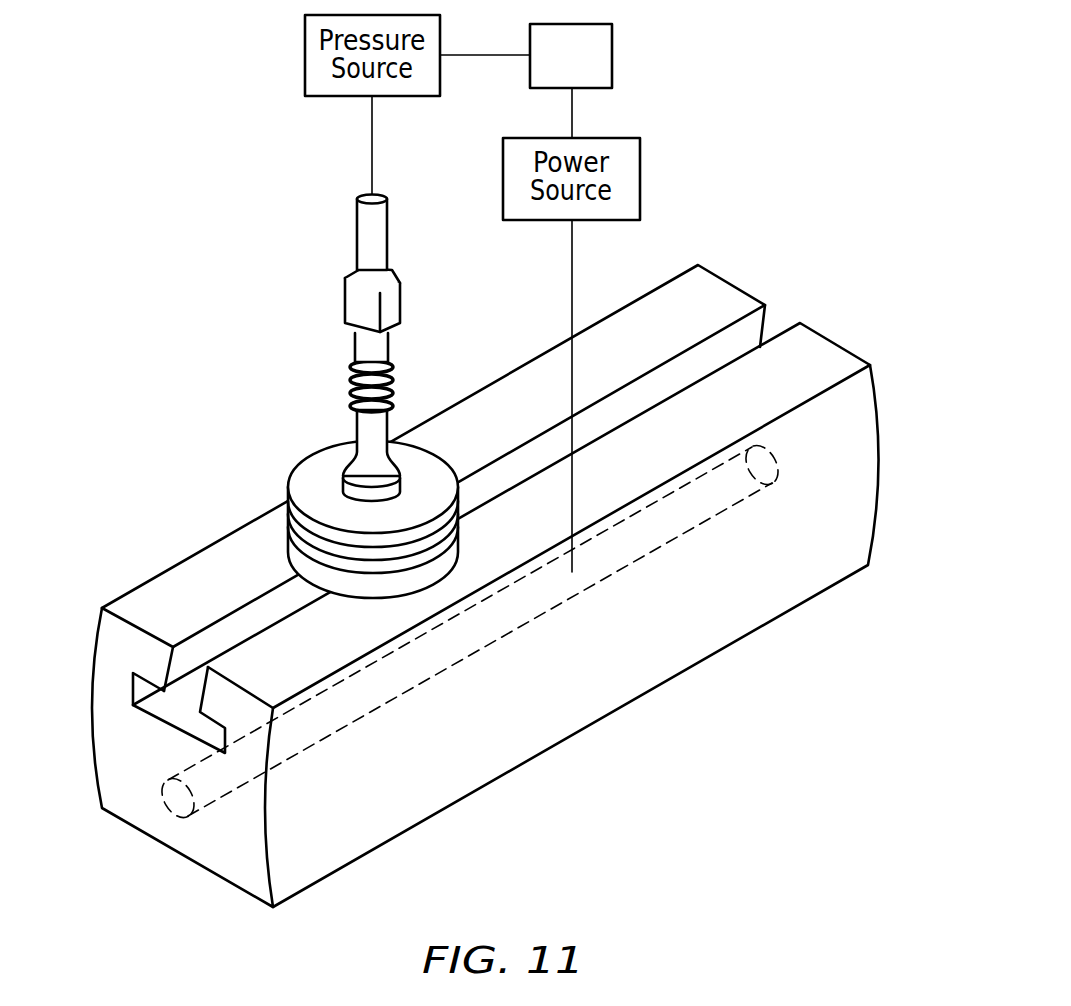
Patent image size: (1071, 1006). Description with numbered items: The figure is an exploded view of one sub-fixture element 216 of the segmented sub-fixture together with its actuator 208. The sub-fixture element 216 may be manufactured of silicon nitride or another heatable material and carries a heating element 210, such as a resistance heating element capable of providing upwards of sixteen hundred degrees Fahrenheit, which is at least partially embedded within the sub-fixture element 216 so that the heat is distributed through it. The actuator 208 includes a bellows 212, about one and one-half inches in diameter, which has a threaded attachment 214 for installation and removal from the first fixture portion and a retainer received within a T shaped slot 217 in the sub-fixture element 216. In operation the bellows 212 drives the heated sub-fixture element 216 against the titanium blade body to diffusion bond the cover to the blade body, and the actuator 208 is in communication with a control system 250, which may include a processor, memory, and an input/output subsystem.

The actuator 208 is at (272, 286).
The heating element 210 is at (666, 519).
The bellows 212 is at (288, 510).
The threaded attachment 214 is at (377, 430).
The sub-fixture element 216 is at (845, 477).
The "T" shaped slot 217 is at (173, 715).
The control system 250 is at (597, 70).